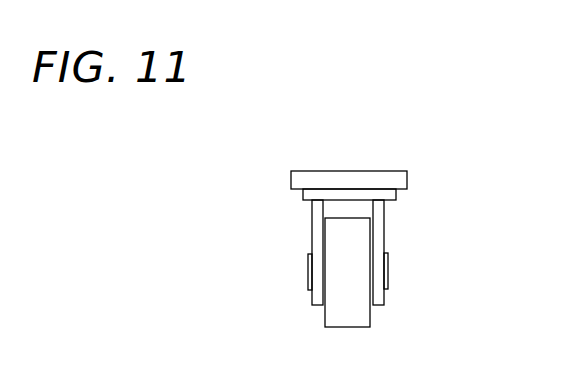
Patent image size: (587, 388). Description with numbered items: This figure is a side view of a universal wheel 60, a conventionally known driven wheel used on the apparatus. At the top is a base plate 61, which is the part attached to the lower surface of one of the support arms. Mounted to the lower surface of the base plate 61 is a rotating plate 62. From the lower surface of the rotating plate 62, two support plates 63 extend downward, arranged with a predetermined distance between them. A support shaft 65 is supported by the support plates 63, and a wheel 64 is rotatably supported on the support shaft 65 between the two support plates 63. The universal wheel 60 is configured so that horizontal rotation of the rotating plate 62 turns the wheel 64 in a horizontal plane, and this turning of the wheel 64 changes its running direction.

The universal wheel 60 is at (345, 128).
The base plate 61 is at (290, 180).
The rotating plate 62 is at (397, 195).
The support plates 63 is at (373, 233).
The wheel 64 is at (371, 314).
The support shaft 65 is at (389, 273).